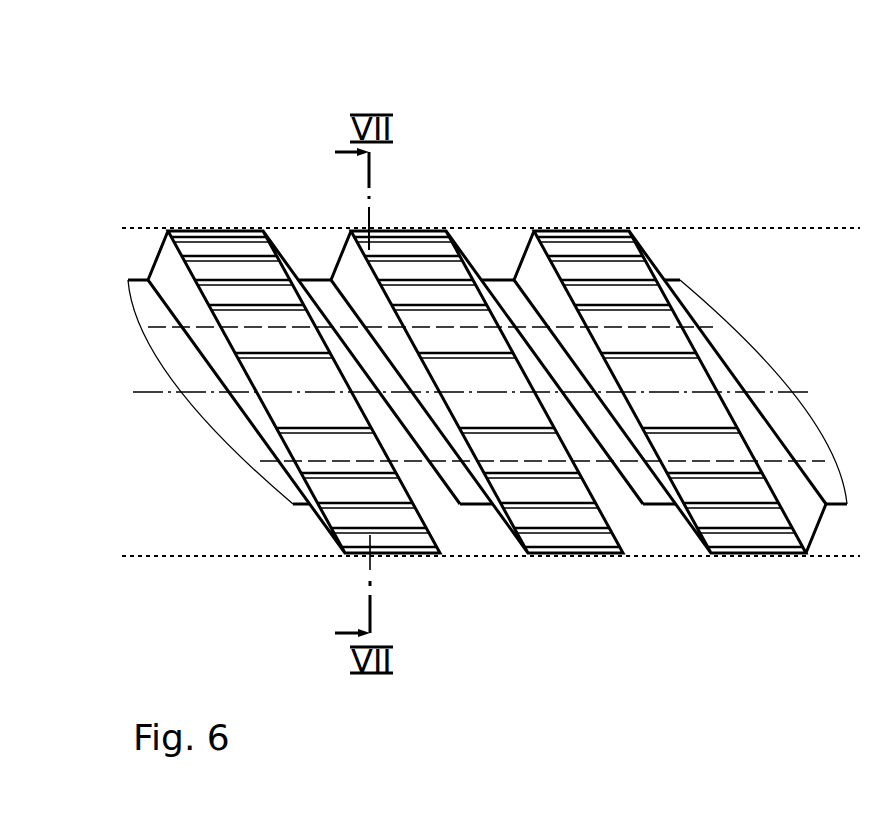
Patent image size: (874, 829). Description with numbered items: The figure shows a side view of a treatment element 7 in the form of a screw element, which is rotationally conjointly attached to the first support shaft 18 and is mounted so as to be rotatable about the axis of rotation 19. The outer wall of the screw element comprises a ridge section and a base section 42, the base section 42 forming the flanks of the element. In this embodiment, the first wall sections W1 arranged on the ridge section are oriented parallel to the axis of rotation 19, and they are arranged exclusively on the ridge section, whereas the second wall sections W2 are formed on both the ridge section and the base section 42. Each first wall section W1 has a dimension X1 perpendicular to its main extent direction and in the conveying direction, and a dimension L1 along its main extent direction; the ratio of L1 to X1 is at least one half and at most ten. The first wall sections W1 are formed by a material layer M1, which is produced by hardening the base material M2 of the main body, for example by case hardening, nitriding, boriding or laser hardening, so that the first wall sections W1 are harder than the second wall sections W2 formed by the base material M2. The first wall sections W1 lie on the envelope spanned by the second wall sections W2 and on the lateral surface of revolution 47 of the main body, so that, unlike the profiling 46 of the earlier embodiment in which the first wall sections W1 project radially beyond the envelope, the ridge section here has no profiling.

The treatment element 7 is at (405, 215).
The first support shaft 18 is at (517, 462).
The axis of rotation 19 is at (697, 393).
The base section 42 is at (573, 228).
The profiling 46 is at (400, 562).
The lateral surface of revolution 47 is at (663, 228).
The material layer M1 is at (548, 505).
The base material M2 is at (598, 533).
The first wall sections W1 is at (615, 257).
The second wall sections W2 is at (255, 267).
The dimension X1 is at (277, 333).
The dimension L1 is at (370, 470).